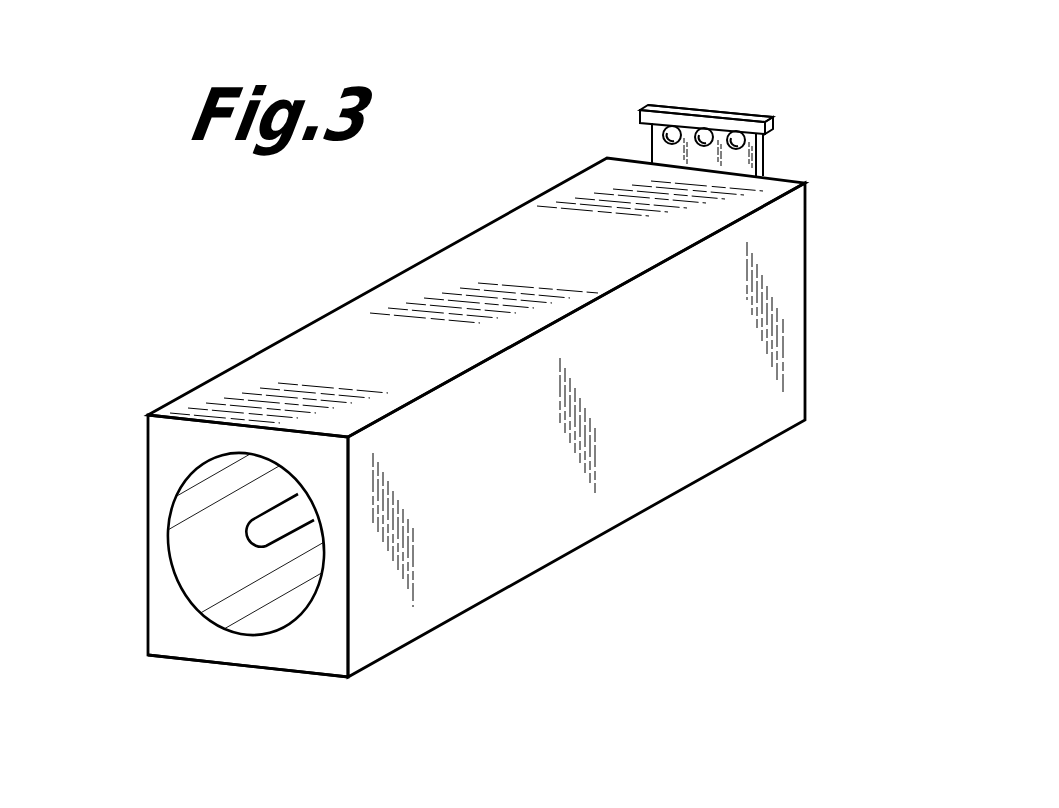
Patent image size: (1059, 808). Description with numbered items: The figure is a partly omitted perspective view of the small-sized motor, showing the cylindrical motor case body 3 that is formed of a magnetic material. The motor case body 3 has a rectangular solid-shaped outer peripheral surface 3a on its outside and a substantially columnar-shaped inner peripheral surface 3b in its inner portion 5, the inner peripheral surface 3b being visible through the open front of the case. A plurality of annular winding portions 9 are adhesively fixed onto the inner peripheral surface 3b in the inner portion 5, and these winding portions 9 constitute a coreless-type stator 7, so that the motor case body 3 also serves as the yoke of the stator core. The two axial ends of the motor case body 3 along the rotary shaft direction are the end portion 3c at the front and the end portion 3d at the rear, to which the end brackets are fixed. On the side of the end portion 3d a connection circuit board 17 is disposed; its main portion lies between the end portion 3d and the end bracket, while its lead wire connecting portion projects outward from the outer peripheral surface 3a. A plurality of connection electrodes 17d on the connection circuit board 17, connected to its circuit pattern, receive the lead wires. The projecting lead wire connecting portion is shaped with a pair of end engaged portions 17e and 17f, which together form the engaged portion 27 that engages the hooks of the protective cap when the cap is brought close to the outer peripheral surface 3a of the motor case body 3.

The motor case body 3 is at (485, 469).
The outer peripheral surface 3a is at (330, 340).
The inner peripheral surface 3b is at (193, 524).
The end portion 3c is at (351, 681).
The end portion 3d is at (808, 302).
The inner portion 5 is at (239, 582).
The stator 7 is at (235, 576).
The winding portions 9 is at (290, 577).
The connection circuit board 17 is at (703, 102).
The connection electrodes 17d is at (734, 132).
The end engaged portion 17e is at (645, 116).
The end engaged portion 17f is at (777, 124).
The engaged portion 27 is at (648, 106).